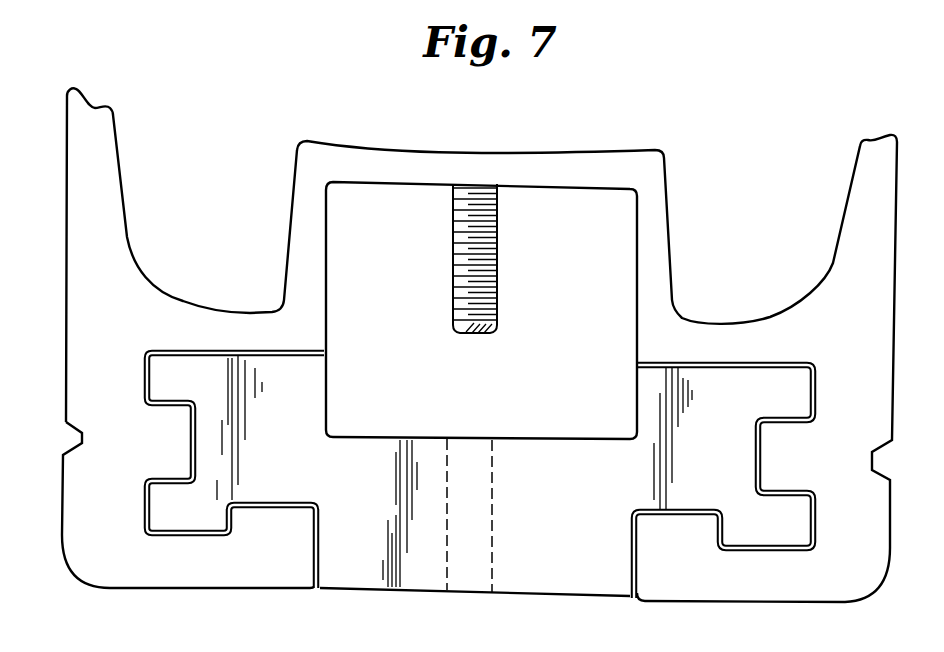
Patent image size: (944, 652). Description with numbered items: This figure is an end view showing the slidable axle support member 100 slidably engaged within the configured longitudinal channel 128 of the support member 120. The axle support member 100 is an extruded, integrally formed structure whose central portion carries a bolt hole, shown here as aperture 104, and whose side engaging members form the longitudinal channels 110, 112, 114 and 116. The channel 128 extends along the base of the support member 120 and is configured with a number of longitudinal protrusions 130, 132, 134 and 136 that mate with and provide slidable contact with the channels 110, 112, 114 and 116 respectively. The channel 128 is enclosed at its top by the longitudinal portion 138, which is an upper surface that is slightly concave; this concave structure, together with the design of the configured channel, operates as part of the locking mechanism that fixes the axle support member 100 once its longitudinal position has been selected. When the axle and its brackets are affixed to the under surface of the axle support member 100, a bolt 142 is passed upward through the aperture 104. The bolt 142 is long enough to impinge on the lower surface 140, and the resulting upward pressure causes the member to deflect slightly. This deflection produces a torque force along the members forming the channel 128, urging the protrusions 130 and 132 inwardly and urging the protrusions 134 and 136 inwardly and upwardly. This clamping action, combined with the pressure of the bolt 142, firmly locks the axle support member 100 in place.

The axle support member 100 is at (548, 562).
The bolt hole 104 is at (470, 438).
The longitudinal channel 110 is at (757, 460).
The longitudinal channel 112 is at (200, 453).
The longitudinal channel 114 is at (653, 502).
The longitudinal channel 116 is at (280, 500).
The support member 120 is at (858, 224).
The longitudinal channel 128 is at (334, 589).
The longitudinal protrusion 130 is at (775, 452).
The longitudinal protrusion 132 is at (176, 437).
The longitudinal protrusion 134 is at (668, 527).
The longitudinal protrusion 136 is at (272, 518).
The longitudinal portion 138 is at (419, 151).
The lower surface 140 is at (555, 190).
The bolt 142 is at (498, 263).